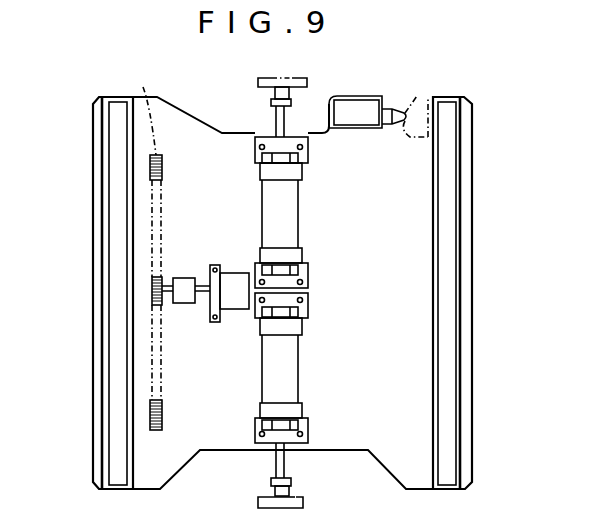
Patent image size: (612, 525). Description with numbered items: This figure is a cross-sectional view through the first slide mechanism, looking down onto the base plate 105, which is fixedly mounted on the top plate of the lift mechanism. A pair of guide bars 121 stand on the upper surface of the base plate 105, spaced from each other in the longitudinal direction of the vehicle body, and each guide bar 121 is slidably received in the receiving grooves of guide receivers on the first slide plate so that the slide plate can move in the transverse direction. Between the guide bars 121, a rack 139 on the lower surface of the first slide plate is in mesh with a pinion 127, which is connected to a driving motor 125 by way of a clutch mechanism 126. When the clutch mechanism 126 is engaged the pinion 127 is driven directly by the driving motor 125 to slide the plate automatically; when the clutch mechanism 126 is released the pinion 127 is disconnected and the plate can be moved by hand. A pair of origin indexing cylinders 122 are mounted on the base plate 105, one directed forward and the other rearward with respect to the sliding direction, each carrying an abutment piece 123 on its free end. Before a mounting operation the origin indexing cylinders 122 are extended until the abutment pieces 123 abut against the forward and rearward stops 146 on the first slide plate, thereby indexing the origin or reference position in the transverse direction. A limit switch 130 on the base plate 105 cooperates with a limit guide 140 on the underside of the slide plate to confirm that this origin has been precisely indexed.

The base plate 105 is at (352, 417).
The guide bars 121 is at (112, 395).
The origin indexing cylinders 122 is at (293, 192).
The abutment pieces 123 is at (288, 97).
The driving motor 125 is at (230, 274).
The clutch mechanism 126 is at (184, 278).
The pinion 127 is at (150, 287).
The limit switch 130 is at (368, 112).
The rack 139 is at (143, 87).
The limit guide 140 is at (411, 140).
The stops 146 is at (272, 78).